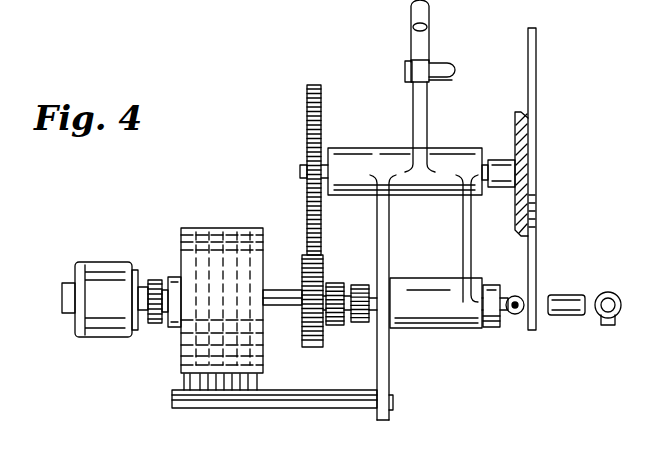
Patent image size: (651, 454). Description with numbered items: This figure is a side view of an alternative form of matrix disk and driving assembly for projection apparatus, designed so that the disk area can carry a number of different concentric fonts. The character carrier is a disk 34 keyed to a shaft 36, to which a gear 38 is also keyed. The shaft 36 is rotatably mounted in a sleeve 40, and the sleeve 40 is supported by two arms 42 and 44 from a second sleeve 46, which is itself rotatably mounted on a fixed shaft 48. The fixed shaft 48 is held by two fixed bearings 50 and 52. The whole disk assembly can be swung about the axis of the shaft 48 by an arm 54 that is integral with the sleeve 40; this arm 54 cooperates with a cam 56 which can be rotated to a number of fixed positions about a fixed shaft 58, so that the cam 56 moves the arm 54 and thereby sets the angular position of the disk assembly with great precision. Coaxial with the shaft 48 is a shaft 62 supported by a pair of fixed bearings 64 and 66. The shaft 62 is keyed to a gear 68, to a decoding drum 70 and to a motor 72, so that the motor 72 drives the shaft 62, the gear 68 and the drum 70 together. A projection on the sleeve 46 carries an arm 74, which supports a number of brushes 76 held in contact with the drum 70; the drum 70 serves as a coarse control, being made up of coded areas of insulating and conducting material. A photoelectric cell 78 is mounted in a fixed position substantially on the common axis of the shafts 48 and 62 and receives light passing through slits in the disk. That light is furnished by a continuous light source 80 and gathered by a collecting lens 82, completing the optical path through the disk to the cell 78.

The disk 34 is at (536, 70).
The shaft 36 is at (486, 160).
The gear 38 is at (307, 125).
The sleeve 40 is at (440, 148).
The arm 42 is at (390, 240).
The arm 44 is at (462, 262).
The second sleeve 46 is at (445, 328).
The fixed shaft 48 is at (487, 285).
The fixed bearing 50 is at (360, 323).
The fixed bearing 52 is at (491, 322).
The arm 54 is at (412, 103).
The cam 56 is at (428, 28).
The fixed shaft 58 is at (453, 69).
The shaft 62 is at (281, 290).
The fixed bearing 64 is at (155, 325).
The fixed bearing 66 is at (334, 325).
The gear 68 is at (305, 346).
The decoding drum 70 is at (224, 230).
The motor 72 is at (103, 262).
The arm 74 is at (172, 402).
The brushes 76 is at (262, 388).
The photoelectric cell 78 is at (517, 314).
The continuous light source 80 is at (611, 292).
The collecting lens 82 is at (569, 296).